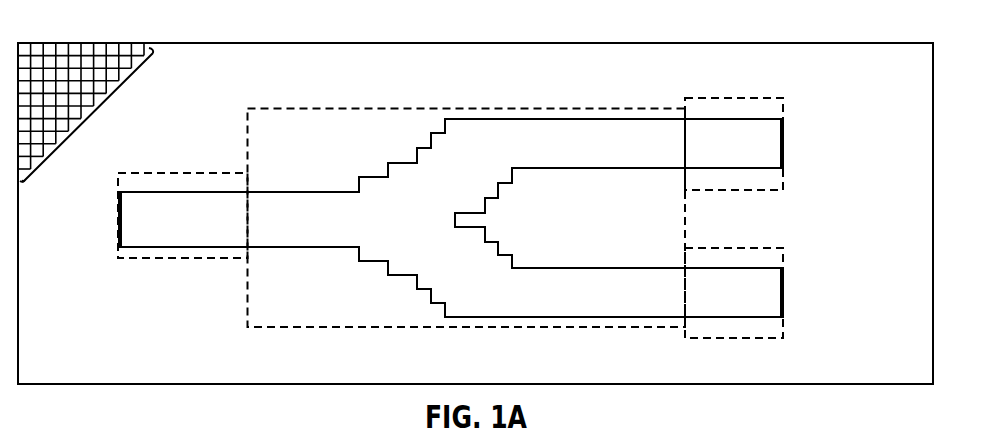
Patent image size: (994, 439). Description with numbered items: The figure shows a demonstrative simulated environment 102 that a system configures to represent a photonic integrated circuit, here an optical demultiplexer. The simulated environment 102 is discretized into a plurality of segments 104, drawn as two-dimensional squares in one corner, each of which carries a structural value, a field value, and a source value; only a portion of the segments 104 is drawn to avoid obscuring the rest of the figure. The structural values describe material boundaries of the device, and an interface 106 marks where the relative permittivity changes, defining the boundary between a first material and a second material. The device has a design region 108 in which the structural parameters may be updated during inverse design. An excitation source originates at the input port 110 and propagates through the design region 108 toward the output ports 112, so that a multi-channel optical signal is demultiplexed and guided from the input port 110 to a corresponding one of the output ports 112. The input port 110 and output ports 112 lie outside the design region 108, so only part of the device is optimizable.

The simulated environment 102 is at (84, 32).
The segments 104 is at (88, 117).
The interface 106 is at (320, 250).
The design region 108 is at (467, 199).
The input port 110 is at (162, 258).
The output ports 112 is at (753, 191).